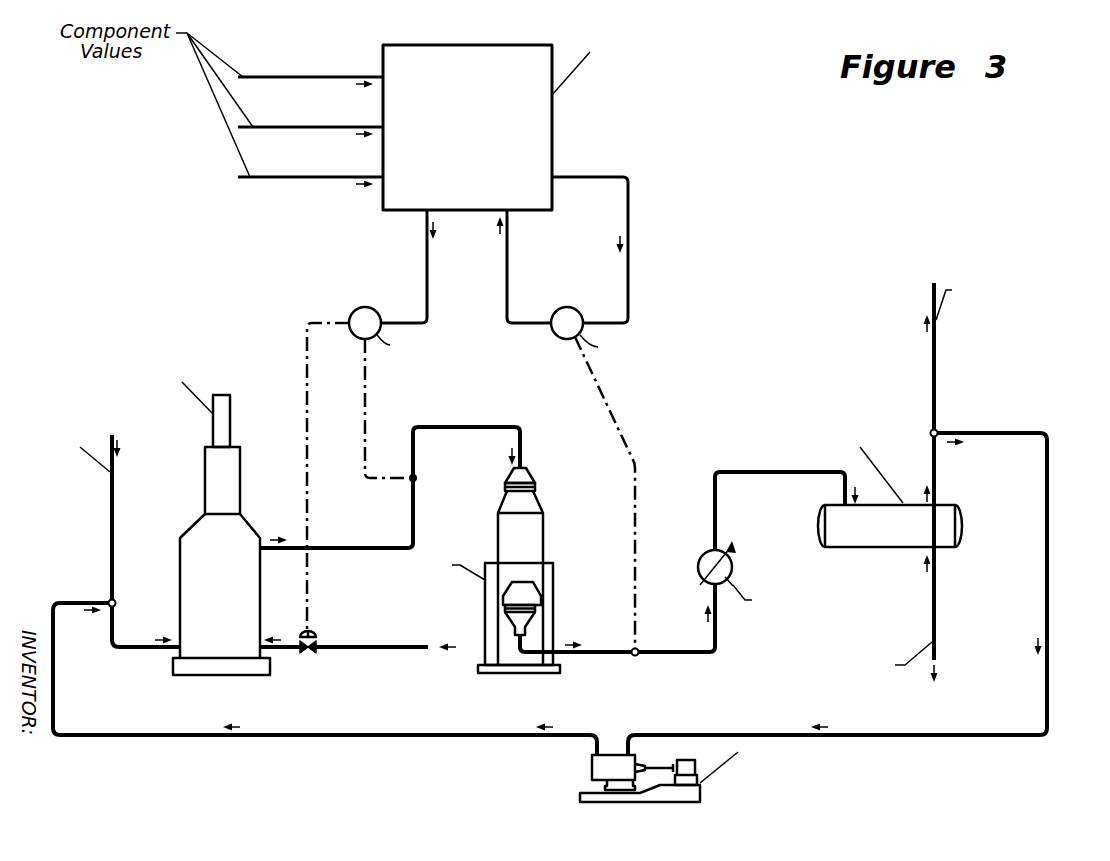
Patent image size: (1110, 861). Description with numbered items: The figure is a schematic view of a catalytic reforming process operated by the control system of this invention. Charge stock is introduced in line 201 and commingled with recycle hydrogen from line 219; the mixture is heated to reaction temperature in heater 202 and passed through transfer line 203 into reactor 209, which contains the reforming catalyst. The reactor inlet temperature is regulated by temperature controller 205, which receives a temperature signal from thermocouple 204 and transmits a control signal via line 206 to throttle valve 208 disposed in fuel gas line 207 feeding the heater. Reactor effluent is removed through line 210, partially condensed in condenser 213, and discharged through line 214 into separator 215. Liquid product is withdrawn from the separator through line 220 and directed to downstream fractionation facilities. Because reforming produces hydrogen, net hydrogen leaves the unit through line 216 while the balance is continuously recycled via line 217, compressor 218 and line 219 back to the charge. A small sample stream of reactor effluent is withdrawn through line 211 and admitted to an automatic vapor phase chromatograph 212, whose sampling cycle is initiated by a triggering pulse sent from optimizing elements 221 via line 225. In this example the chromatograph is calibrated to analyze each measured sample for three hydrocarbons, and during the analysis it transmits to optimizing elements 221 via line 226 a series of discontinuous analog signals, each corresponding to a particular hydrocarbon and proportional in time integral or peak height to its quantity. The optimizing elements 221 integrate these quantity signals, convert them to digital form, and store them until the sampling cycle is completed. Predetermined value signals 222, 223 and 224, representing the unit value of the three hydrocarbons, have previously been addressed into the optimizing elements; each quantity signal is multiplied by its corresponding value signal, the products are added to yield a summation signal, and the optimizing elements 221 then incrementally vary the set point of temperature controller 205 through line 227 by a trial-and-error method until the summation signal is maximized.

The charge stock line 201 is at (110, 533).
The heater 202 is at (205, 482).
The transfer line 203 is at (414, 530).
The thermocouple 204 is at (372, 425).
The temperature controller 205 is at (356, 309).
The control signal line 206 is at (305, 372).
The fuel gas line 207 is at (382, 645).
The throttle valve 208 is at (315, 634).
The reactor 209 is at (538, 503).
The reactor effluent line 210 is at (572, 655).
The sample line 211 is at (622, 433).
The automatic vapor phase chromatograph 212 is at (573, 308).
The condenser 213 is at (707, 552).
The condenser discharge line 214 is at (742, 490).
The separator 215 is at (880, 547).
The net hydrogen line 216 is at (937, 380).
The recycle hydrogen line 217 is at (993, 430).
The compressor 218 is at (592, 758).
The recycle hydrogen line 219 is at (102, 602).
The liquid product line 220 is at (937, 610).
The optimizing elements 221 is at (448, 44).
The predetermined value signal 222 is at (343, 75).
The predetermined value signal 223 is at (343, 125).
The predetermined value signal 224 is at (343, 175).
The triggering pulse line 225 is at (628, 222).
The analog signal line 226 is at (507, 258).
The set point line 227 is at (425, 255).